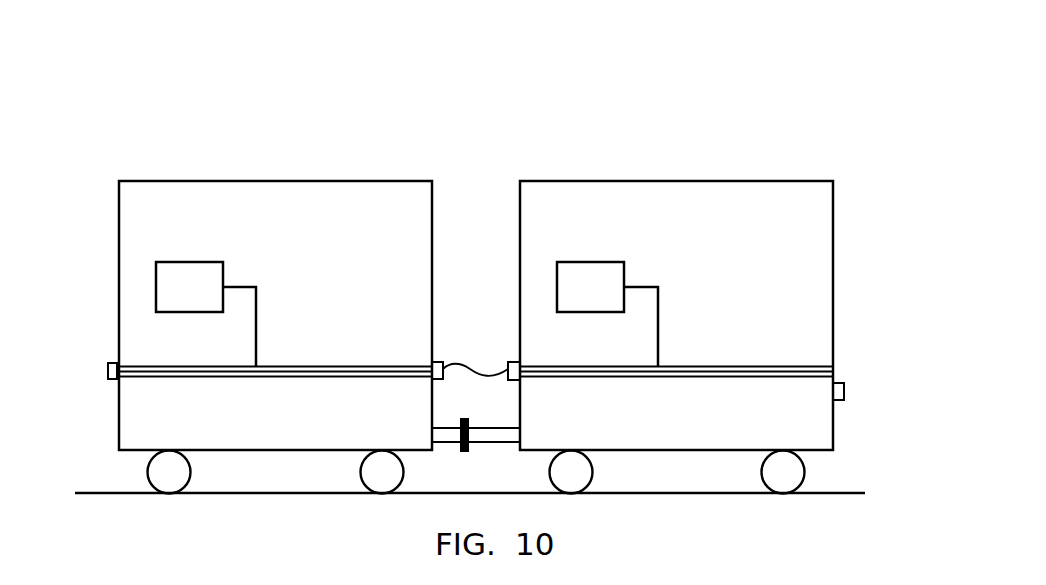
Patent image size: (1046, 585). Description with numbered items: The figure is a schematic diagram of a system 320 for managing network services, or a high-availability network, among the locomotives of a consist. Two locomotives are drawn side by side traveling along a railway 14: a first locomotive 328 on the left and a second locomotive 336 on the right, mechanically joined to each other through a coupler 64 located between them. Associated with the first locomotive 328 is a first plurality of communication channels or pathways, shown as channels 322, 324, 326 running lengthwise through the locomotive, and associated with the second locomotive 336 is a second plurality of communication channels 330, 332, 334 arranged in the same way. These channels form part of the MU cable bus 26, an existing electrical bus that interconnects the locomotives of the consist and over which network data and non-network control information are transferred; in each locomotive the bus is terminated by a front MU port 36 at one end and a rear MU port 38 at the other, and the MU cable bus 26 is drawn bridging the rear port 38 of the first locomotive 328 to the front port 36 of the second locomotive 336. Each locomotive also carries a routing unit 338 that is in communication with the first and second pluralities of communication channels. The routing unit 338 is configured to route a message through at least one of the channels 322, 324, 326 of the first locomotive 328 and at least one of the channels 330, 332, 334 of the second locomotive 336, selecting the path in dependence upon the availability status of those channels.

The railway 14 is at (110, 493).
The MU cable bus 26 is at (478, 348).
The front MU port 36 is at (111, 366).
The rear MU port 38 is at (440, 362).
The coupler 64 is at (496, 437).
The system 320 is at (288, 82).
The communication channel 322 is at (282, 366).
The communication channel 324 is at (322, 371).
The communication channel 326 is at (388, 376).
The first locomotive 328 is at (198, 158).
The communication channel 330 is at (680, 366).
The communication channel 332 is at (727, 371).
The communication channel 334 is at (793, 376).
The second locomotive 336 is at (572, 165).
The routing unit 338 is at (181, 262).